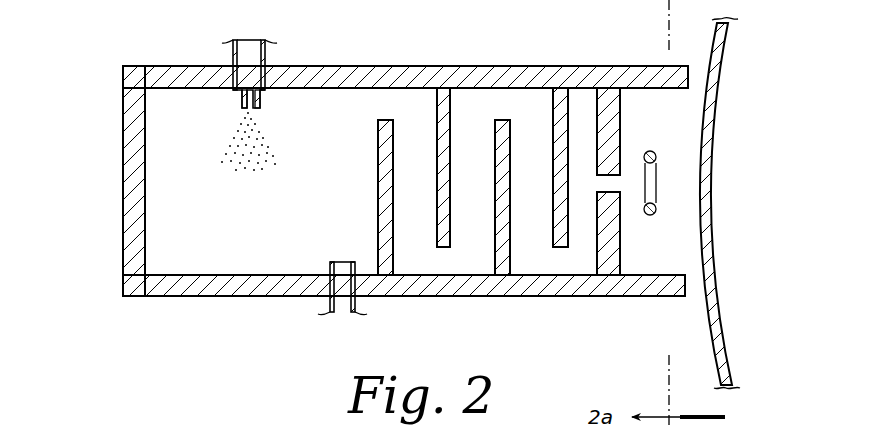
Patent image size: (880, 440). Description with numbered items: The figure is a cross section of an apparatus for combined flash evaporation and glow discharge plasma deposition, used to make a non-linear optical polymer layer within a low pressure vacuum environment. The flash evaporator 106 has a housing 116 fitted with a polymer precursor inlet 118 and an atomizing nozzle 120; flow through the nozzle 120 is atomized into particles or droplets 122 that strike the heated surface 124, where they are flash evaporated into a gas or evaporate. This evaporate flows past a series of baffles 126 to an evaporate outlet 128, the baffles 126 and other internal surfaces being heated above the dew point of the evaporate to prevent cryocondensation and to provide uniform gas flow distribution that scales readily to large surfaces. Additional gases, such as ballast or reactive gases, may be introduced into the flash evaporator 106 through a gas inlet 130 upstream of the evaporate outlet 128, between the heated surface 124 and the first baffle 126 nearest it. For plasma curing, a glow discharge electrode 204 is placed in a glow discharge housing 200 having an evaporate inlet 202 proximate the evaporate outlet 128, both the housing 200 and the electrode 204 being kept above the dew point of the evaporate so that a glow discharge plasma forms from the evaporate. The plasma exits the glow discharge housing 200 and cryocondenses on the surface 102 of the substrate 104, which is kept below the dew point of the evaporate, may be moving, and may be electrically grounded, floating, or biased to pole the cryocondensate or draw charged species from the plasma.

The surface 102 is at (707, 310).
The substrate 104 is at (738, 292).
The flash evaporator 106 is at (100, 186).
The housing 116 is at (372, 66).
The polymer precursor inlet 118 is at (232, 54).
The atomizing nozzle 120 is at (280, 132).
The particles or droplets 122 is at (226, 185).
The heated surface 124 is at (242, 275).
The baffles 126 is at (378, 143).
The evaporate outlet 128 is at (592, 192).
The gas inlet 130 is at (300, 316).
The glow discharge housing 200 is at (697, 54).
The evaporate inlet 202 is at (628, 176).
The glow discharge electrode 204 is at (658, 190).